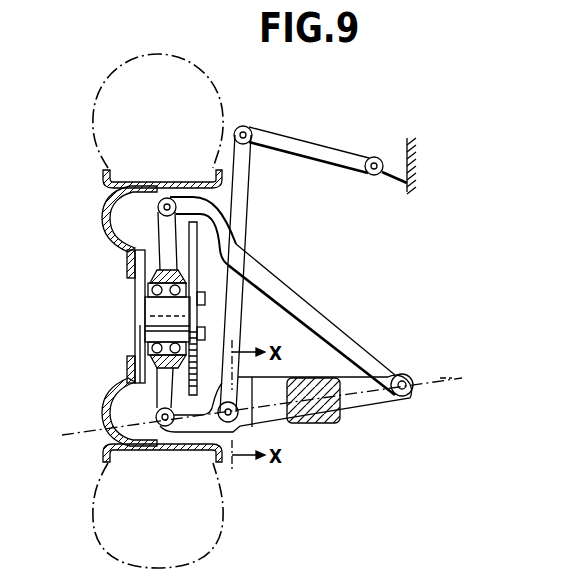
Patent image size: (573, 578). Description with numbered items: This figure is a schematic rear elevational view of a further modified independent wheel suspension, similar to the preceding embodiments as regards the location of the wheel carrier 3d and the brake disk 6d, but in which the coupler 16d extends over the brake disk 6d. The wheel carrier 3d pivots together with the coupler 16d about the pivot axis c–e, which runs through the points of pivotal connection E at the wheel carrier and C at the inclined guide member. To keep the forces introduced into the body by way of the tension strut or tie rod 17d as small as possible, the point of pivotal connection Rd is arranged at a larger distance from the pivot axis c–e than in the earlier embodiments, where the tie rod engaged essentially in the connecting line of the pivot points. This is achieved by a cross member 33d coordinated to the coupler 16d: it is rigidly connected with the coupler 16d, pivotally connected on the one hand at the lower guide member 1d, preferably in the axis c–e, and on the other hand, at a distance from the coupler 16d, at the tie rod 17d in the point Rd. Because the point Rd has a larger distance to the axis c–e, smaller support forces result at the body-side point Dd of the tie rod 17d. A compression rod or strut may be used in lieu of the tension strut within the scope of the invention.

The point of pivotal connection Rd is at (240, 127).
The tie rod 17d is at (328, 152).
The point of pivotal connection Dd is at (376, 156).
The cross member 33d is at (240, 218).
The brake disk 6d is at (237, 242).
The wheel carrier 3d is at (162, 232).
The coupler 16d is at (325, 318).
The lower guide member 1d is at (352, 410).
The point of pivotal connection C is at (406, 374).
The point of pivotal connection E is at (157, 413).
The pivot axis end point e is at (256, 407).
The pivot axis end point c is at (438, 373).